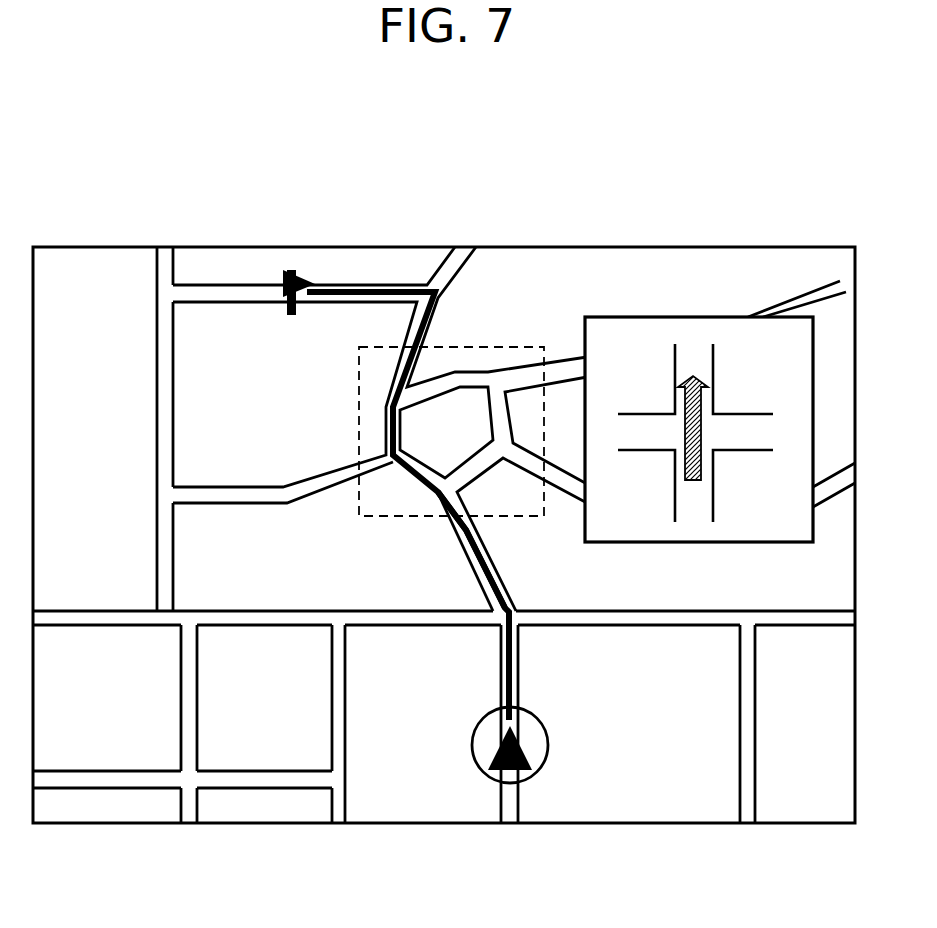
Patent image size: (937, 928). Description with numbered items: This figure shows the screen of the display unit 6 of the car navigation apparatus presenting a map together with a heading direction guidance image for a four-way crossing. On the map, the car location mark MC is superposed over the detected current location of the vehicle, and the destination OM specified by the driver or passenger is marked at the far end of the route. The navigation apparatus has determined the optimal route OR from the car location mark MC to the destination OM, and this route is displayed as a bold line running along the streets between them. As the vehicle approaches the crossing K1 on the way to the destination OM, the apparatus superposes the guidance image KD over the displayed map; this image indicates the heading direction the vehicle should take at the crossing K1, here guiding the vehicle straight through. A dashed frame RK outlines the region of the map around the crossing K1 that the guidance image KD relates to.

The display unit 6 is at (748, 247).
The destination OM is at (290, 315).
The enlarged display area RK is at (354, 413).
The superposed image KD is at (627, 317).
The crossing K1 is at (478, 601).
The optimal route OR is at (507, 587).
The car location mark MC is at (546, 731).